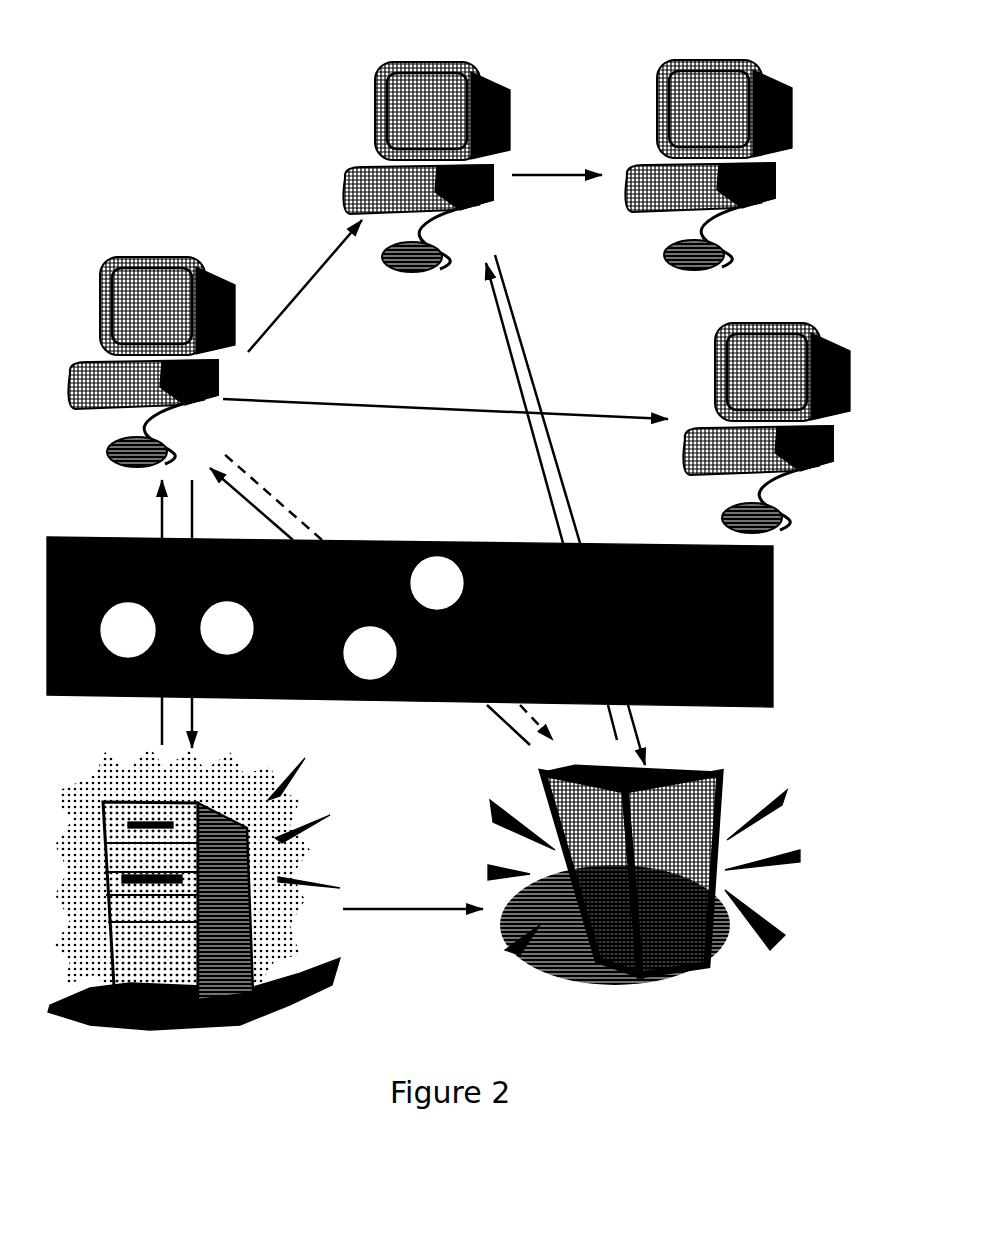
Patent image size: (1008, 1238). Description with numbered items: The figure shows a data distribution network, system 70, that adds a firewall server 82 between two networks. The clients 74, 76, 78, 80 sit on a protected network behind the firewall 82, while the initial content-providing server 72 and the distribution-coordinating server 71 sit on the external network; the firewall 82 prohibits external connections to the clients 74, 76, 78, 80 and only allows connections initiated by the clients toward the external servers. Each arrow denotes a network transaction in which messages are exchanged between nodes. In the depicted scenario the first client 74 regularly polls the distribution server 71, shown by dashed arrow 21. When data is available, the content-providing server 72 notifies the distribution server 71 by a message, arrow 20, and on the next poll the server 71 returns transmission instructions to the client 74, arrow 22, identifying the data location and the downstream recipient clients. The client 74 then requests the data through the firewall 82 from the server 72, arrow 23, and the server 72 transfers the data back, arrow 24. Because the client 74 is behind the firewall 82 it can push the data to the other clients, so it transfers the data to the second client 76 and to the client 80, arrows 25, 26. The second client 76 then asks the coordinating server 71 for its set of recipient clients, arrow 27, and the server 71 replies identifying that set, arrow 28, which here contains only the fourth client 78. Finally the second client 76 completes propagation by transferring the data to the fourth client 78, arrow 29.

The arrow 20 is at (450, 918).
The dashed arrow 21 is at (437, 583).
The arrow 22 is at (370, 653).
The arrow 23 is at (227, 628).
The arrow 24 is at (128, 630).
The arrow 25 is at (330, 262).
The arrow 26 is at (330, 406).
The arrow 27 is at (570, 509).
The arrow 28 is at (532, 293).
The arrow 29 is at (530, 176).
The system 70 is at (842, 983).
The distribution-coordinating server 71 is at (695, 985).
The initial content-providing server 72 is at (255, 1022).
The first client 74 is at (186, 258).
The second client 76 is at (474, 70).
The fourth client 78 is at (763, 80).
The client 80 is at (843, 352).
The firewall server 82 is at (778, 672).